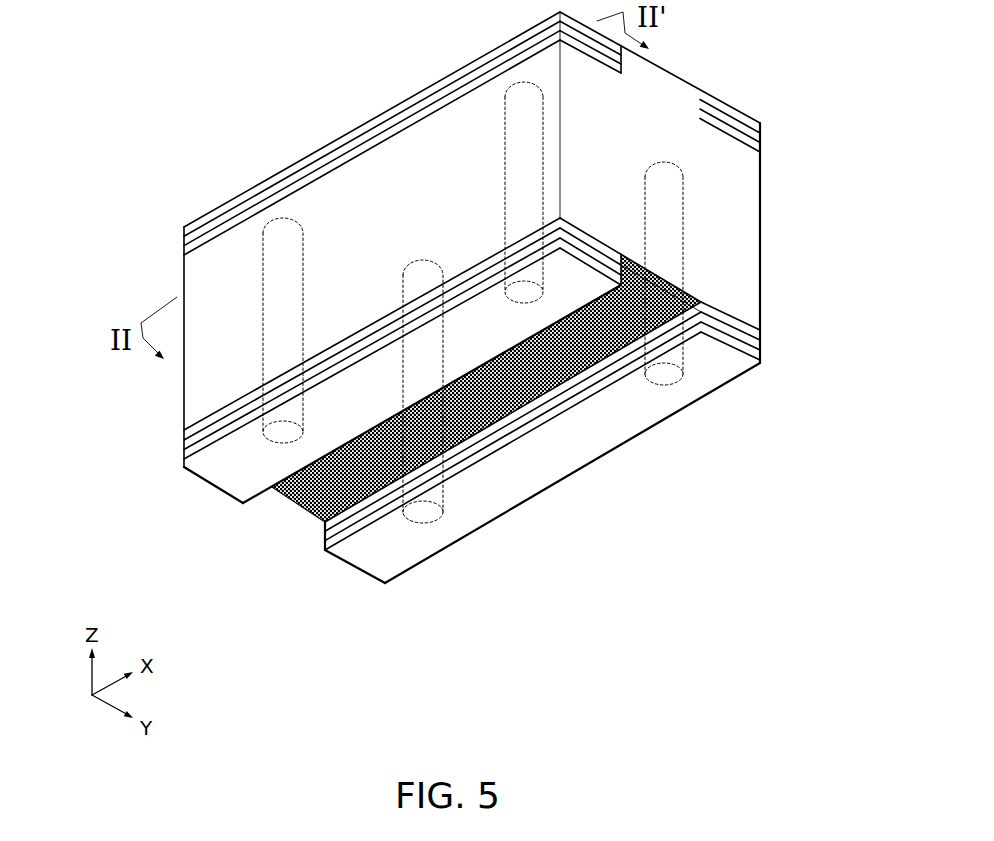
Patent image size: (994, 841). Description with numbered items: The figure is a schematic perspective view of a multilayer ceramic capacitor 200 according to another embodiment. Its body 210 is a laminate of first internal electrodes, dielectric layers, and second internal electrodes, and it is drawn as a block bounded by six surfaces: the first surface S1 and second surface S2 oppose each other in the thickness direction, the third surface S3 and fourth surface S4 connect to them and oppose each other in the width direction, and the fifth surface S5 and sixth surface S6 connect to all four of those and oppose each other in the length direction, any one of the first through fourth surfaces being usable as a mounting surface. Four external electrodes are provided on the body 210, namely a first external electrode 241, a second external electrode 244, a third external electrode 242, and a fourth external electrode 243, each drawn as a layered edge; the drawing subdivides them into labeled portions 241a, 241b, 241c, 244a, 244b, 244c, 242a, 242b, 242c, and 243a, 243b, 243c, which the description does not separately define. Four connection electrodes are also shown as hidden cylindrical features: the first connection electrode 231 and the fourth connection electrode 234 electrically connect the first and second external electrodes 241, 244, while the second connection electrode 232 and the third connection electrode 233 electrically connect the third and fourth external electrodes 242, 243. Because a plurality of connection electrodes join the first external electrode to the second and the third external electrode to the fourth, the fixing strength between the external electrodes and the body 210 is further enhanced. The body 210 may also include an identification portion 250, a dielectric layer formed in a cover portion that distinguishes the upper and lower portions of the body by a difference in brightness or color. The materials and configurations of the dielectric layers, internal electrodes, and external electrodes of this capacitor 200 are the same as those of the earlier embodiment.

The multilayer ceramic capacitor 200 is at (275, 57).
The body 210 is at (310, 522).
The first connection electrode 231 is at (220, 490).
The second connection electrode 232 is at (424, 516).
The third connection electrode 233 is at (667, 382).
The fourth connection electrode 234 is at (590, 403).
The first external electrode 241 is at (91, 447).
The first sub-layer of first side layer 241a is at (184, 439).
The second sub-layer of first side layer 241b is at (184, 453).
The third sub-layer of first side layer 241c is at (184, 464).
The third external electrode 242 is at (856, 322).
The first sub-layer of second side layer 242a is at (760, 330).
The second sub-layer of second side layer 242b is at (760, 343).
The third sub-layer of second side layer 242c is at (760, 356).
The fourth external electrode 243 is at (856, 110).
The first sub-layer of third side layer 243a is at (760, 146).
The second sub-layer of third side layer 243b is at (760, 134).
The third sub-layer of third side layer 243c is at (760, 123).
The second external electrode 244 is at (91, 212).
The first sub-layer of fourth side layer 244a is at (184, 248).
The second sub-layer of fourth side layer 244b is at (184, 237).
The third sub-layer of fourth side layer 244c is at (184, 227).
The identification portion 250 is at (184, 431).
The first surface S1 is at (316, 200).
The second surface S2 is at (373, 516).
The third surface S3 is at (256, 240).
The fourth surface S4 is at (521, 481).
The fifth surface S5 is at (277, 490).
The sixth surface S6 is at (645, 127).